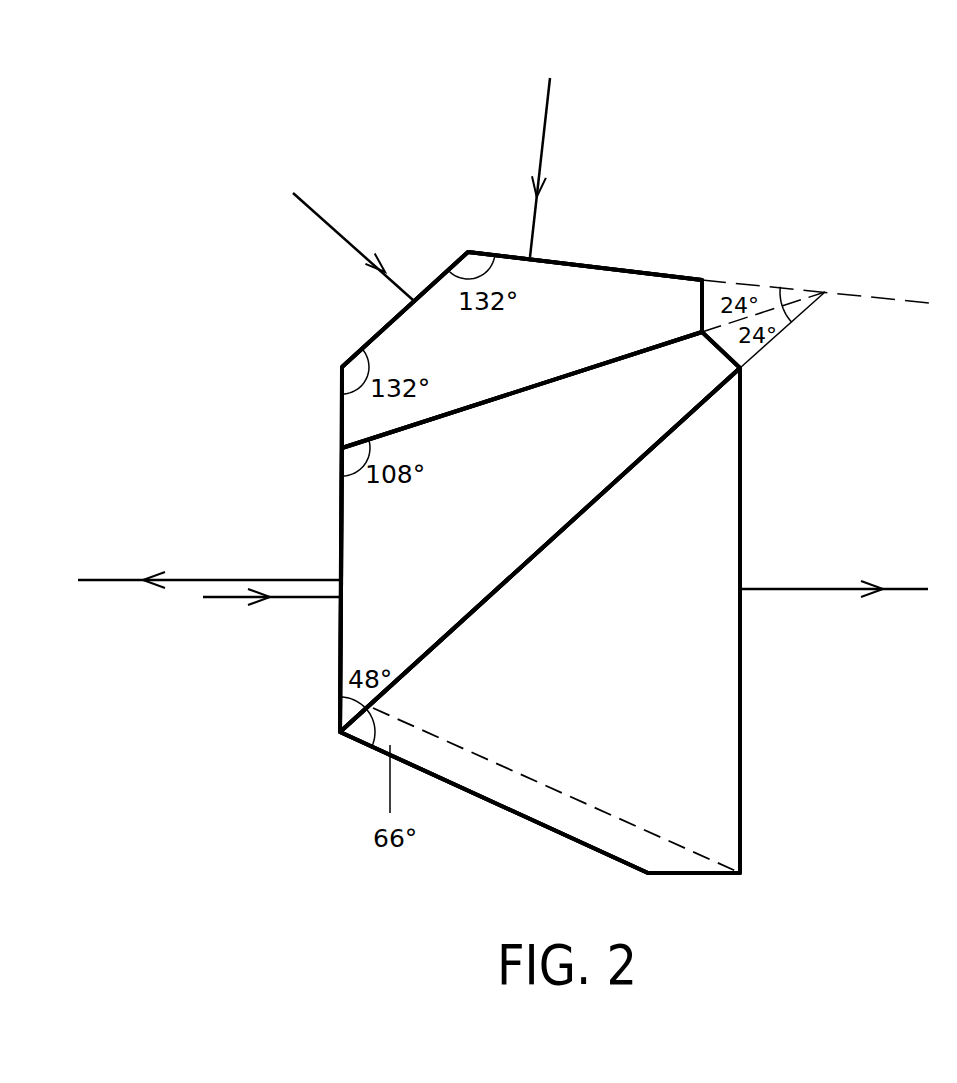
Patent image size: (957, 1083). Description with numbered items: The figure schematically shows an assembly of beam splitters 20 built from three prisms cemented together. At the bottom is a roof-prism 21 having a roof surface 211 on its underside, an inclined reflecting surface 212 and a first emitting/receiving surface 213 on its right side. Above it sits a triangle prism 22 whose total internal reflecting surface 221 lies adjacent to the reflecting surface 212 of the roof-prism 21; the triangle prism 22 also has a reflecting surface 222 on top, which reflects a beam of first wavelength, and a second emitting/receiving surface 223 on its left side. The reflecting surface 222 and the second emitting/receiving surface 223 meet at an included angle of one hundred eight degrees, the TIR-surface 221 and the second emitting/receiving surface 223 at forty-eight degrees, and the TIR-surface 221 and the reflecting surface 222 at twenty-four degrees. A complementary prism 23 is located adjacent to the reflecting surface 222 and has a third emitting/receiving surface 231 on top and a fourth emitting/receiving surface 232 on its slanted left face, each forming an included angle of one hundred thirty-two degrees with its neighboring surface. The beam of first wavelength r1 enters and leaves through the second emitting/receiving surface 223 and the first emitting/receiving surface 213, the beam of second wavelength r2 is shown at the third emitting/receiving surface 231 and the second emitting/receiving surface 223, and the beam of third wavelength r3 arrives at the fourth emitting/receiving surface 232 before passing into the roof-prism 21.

The assembly of beam splitters 20 is at (248, 105).
The roof-prism 21 is at (730, 797).
The roof surface 211 is at (500, 807).
The reflecting surface 212 is at (438, 647).
The first emitting/receiving surface 213 is at (743, 732).
The triangle prism 22 is at (350, 531).
The total internal reflecting surface 221 is at (677, 407).
The reflecting surface 222 is at (640, 368).
The second emitting/receiving surface 223 is at (336, 709).
The complementary prism 23 is at (350, 428).
The third emitting/receiving surface 231 is at (585, 258).
The fourth emitting/receiving surface 232 is at (380, 326).
The beam of first wavelength r1 is at (229, 598).
The beam of second wavelength r2 is at (212, 580).
The beam of third wavelength r3 is at (340, 233).